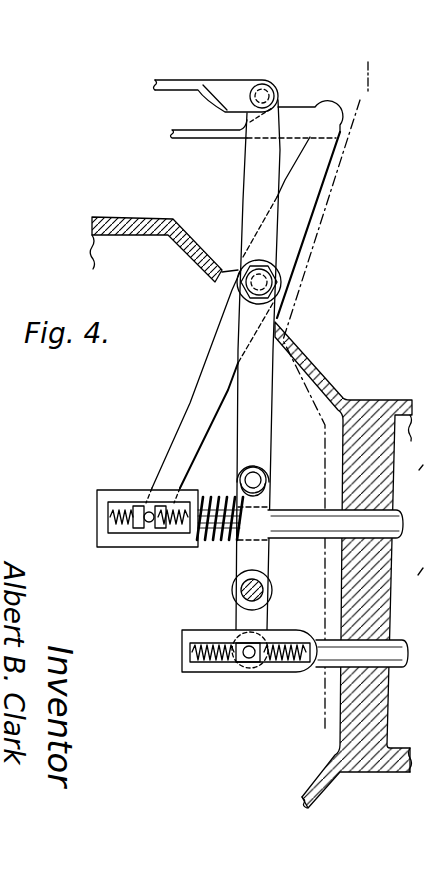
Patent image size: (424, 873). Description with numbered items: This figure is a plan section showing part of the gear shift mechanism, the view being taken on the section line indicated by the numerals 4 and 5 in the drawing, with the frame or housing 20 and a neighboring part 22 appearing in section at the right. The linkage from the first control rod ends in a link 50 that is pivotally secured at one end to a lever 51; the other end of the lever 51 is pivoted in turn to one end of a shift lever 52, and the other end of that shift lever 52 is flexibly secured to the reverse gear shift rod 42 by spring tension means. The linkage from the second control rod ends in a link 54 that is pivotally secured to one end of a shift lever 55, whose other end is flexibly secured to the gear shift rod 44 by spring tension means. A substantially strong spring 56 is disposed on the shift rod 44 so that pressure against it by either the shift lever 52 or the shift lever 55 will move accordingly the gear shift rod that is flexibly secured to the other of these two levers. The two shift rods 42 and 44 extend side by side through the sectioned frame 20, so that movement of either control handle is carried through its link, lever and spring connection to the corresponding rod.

The frame housing 20 is at (418, 742).
The section line 5- 5 is at (368, 65).
The link 50 is at (165, 90).
The link 54 is at (187, 138).
The lever 51 is at (245, 176).
The shift lever 55 is at (204, 388).
The spring 56 is at (217, 498).
The shift lever 52 is at (233, 560).
The gear shift rod 44 is at (305, 540).
The reverse gear shift rod 42 is at (315, 670).
The part 4 (truncated) 4 is at (418, 479).
The part 22 (truncated) 22 is at (417, 581).